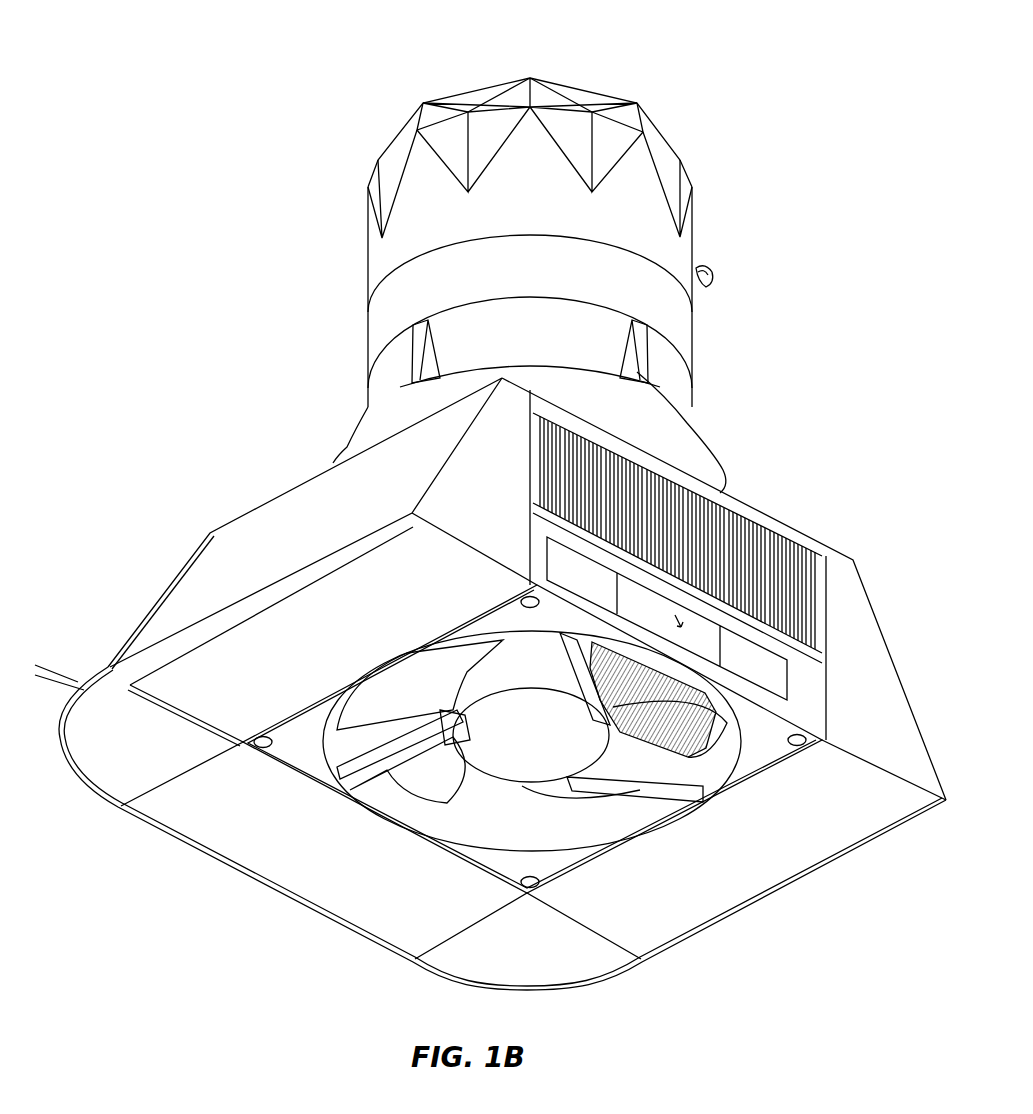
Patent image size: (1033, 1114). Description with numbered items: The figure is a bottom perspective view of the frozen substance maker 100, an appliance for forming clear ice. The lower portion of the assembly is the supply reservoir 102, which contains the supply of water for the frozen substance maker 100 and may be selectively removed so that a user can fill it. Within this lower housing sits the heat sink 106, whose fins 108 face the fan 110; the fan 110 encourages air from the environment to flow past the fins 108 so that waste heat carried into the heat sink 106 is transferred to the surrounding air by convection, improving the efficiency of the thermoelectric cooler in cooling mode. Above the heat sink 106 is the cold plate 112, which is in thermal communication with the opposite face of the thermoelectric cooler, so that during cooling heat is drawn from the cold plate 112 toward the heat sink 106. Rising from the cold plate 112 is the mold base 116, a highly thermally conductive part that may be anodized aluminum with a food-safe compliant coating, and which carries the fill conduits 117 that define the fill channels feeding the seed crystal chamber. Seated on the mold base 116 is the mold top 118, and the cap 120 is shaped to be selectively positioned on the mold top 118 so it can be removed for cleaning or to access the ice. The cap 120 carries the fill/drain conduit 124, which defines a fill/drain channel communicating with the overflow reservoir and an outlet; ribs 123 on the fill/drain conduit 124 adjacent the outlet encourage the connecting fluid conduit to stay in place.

The frozen substance maker 100 is at (117, 65).
The supply reservoir 102 is at (192, 575).
The heat sink 106 is at (748, 505).
The fins 108 is at (803, 552).
The fan 110 is at (778, 697).
The cold plate 112 is at (717, 443).
The mold base 116 is at (692, 347).
The fill conduits 117 is at (408, 352).
The mold top 118 is at (378, 262).
The cap 120 is at (418, 128).
The ribs 123 is at (702, 253).
The fill/drain conduit 124 is at (711, 269).